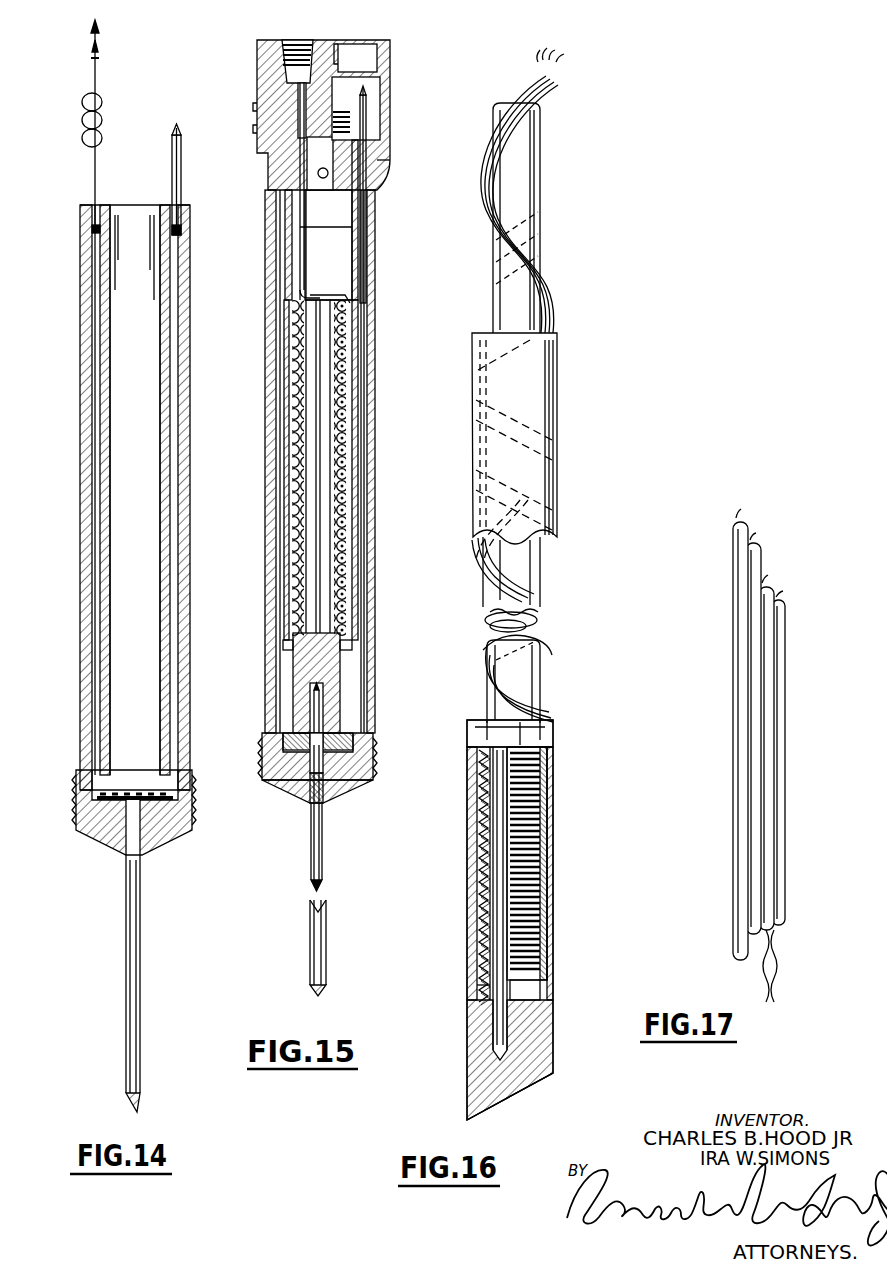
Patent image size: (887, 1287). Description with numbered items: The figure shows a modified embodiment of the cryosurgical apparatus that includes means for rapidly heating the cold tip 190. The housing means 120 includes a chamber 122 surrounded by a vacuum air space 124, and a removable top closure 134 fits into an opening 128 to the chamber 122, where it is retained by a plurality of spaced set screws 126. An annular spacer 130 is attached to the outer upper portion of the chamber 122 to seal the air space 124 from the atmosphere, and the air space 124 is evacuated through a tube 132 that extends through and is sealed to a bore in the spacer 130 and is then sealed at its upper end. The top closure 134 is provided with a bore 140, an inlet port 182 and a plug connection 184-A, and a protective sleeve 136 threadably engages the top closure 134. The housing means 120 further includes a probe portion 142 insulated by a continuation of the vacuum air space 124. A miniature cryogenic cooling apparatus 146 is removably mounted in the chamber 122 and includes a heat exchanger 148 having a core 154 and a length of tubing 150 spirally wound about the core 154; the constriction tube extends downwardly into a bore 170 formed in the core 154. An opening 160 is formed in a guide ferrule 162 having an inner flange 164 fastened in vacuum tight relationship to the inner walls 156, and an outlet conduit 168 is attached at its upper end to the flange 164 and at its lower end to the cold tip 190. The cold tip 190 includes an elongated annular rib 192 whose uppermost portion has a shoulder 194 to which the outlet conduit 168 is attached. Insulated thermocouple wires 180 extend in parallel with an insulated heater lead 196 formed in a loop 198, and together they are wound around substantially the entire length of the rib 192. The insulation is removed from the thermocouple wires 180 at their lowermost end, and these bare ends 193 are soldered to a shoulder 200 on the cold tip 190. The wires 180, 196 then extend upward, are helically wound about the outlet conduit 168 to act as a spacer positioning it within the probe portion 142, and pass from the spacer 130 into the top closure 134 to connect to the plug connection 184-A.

In FIG. 14, the housing means 120 is at (193, 360).
In FIG. 15, the housing means 120 is at (378, 352).
In FIG. 15, the chamber 122 is at (337, 265).
In FIG. 14, the vacuum air space 124 is at (93, 522).
In FIG. 15, the vacuum air space 124 is at (283, 240).
In FIG. 15, the set screws 126 is at (328, 168).
In FIG. 14, the opening 128 is at (145, 223).
In FIG. 14, the annular spacer 130 is at (98, 206).
In FIG. 14, the tube 132 is at (183, 153).
In FIG. 15, the tube 132 is at (368, 100).
In FIG. 15, the top closure 134 is at (262, 48).
In FIG. 15, the protective sleeve 136 is at (387, 167).
In FIG. 15, the bore 140 is at (313, 137).
In FIG. 14, the probe portion 142 is at (141, 963).
In FIG. 15, the probe portion 142 is at (323, 877).
In FIG. 16, the probe portion 142 is at (470, 465).
In FIG. 15, the miniature cryogenic cooling apparatus 146 is at (327, 277).
In FIG. 15, the heat exchanger 148 is at (350, 303).
In FIG. 15, the tubing 150 is at (300, 227).
In FIG. 15, the core 154 is at (320, 663).
In FIG. 15, the inner walls 156 is at (291, 645).
In FIG. 15, the opening 160 is at (263, 770).
In FIG. 15, the guide ferrule 162 is at (347, 737).
In FIG. 15, the inner flange 164 is at (370, 768).
In FIG. 15, the outlet conduit 168 is at (363, 790).
In FIG. 16, the outlet conduit 168 is at (510, 587).
In FIG. 15, the bore 170 is at (320, 707).
In FIG. 16, the thermocouple wires 180 is at (557, 82).
In FIG. 17, the thermocouple wires 180 is at (762, 752).
In FIG. 15, the inlet port 182 is at (303, 42).
In FIG. 15, the plug connection 184-A is at (367, 50).
In FIG. 16, the cold tip 190 is at (533, 1093).
In FIG. 16, the annular rib 192 is at (473, 870).
In FIG. 16, the bare ends 193 is at (477, 987).
In FIG. 16, the shoulder 194 is at (473, 767).
In FIG. 16, the heater lead 196 is at (535, 80).
In FIG. 17, the heater lead 196 is at (740, 670).
In FIG. 17, the loop 198 is at (740, 968).
In FIG. 16, the shoulder 200 is at (483, 1007).